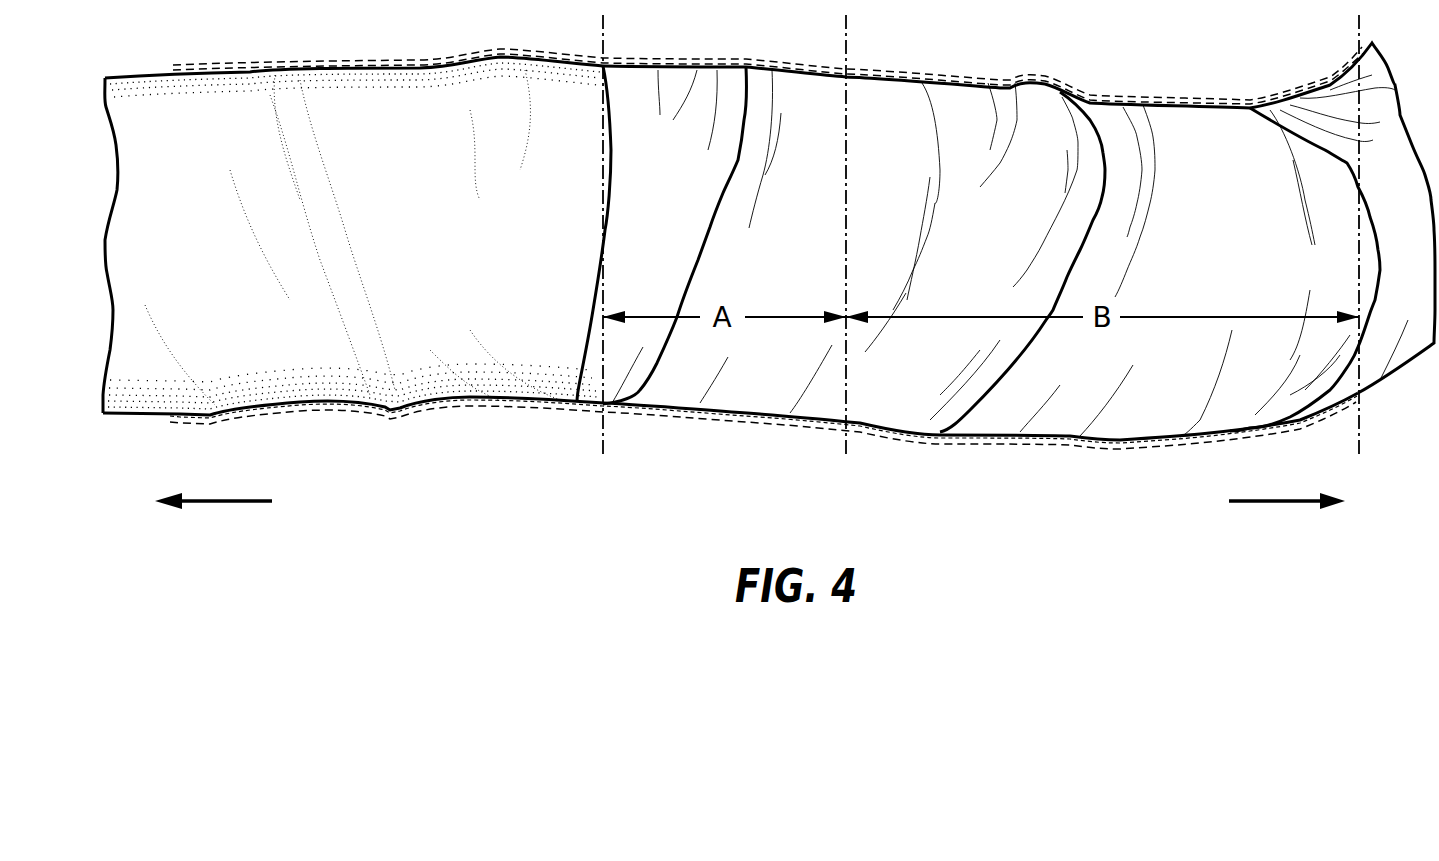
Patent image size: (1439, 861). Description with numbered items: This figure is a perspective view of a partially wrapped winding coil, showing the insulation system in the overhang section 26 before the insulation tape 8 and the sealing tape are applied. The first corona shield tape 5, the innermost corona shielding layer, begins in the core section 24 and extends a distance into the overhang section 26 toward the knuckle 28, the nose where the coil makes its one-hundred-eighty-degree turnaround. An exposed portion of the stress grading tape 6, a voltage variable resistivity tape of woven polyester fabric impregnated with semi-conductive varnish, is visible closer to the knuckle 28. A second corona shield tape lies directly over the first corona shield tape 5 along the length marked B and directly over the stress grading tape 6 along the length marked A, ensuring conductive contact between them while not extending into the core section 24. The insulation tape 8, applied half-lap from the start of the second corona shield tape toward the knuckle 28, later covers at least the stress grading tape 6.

The first corona shield tape 5 is at (765, 382).
The stress grading tape 6 is at (420, 365).
The insulation tape 8 is at (935, 73).
The core section 24 is at (1278, 502).
The overhang section 26 is at (941, 503).
The knuckle 28 is at (222, 503).